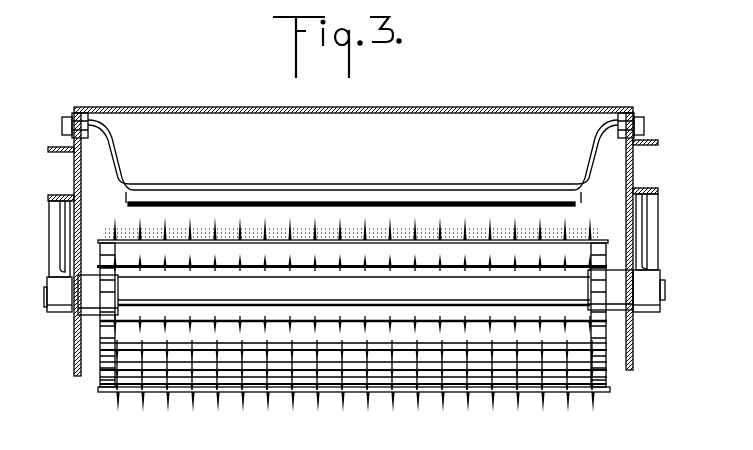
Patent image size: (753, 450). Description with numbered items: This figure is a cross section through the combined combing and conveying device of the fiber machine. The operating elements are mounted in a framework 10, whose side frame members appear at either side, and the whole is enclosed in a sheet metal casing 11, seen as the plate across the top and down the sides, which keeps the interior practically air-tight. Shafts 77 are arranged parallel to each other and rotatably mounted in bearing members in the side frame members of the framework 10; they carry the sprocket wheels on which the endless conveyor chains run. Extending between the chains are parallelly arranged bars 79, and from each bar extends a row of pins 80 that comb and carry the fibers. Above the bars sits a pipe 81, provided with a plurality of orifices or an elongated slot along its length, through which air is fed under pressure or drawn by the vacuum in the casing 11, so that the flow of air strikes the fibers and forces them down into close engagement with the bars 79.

The framework 10 is at (639, 175).
The casing 11 is at (382, 107).
The shaft 77 is at (666, 292).
The bar 79 is at (205, 365).
The pin 80 is at (463, 400).
The pipe 81 is at (483, 190).